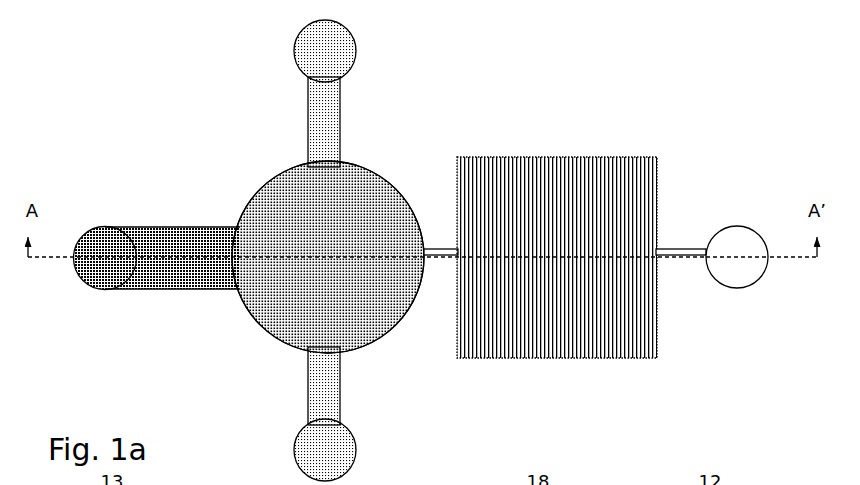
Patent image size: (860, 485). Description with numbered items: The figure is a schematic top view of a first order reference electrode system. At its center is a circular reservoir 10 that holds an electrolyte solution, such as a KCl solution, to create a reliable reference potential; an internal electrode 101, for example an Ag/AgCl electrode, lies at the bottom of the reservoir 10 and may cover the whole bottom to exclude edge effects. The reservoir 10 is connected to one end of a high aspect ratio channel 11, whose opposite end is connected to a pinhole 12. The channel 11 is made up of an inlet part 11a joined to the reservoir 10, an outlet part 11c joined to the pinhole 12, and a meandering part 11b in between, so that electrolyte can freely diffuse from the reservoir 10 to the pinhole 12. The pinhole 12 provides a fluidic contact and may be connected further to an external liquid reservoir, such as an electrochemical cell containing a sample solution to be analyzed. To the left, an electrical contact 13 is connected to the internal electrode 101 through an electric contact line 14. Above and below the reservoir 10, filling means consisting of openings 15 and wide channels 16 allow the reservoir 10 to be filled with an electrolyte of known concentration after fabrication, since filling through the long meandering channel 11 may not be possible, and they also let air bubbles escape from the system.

The reservoir 10 is at (328, 257).
The internal electrode 101 is at (328, 257).
The high aspect ratio channel 11 is at (561, 201).
The inlet part 11a is at (441, 240).
The meandering part 11b is at (458, 150).
The outlet part 11c is at (684, 194).
The pinhole 12 is at (737, 257).
The electrical contact 13 is at (106, 243).
The electric contact line 14 is at (187, 250).
The openings 15 is at (312, 48).
The wide channels 16 is at (320, 125).